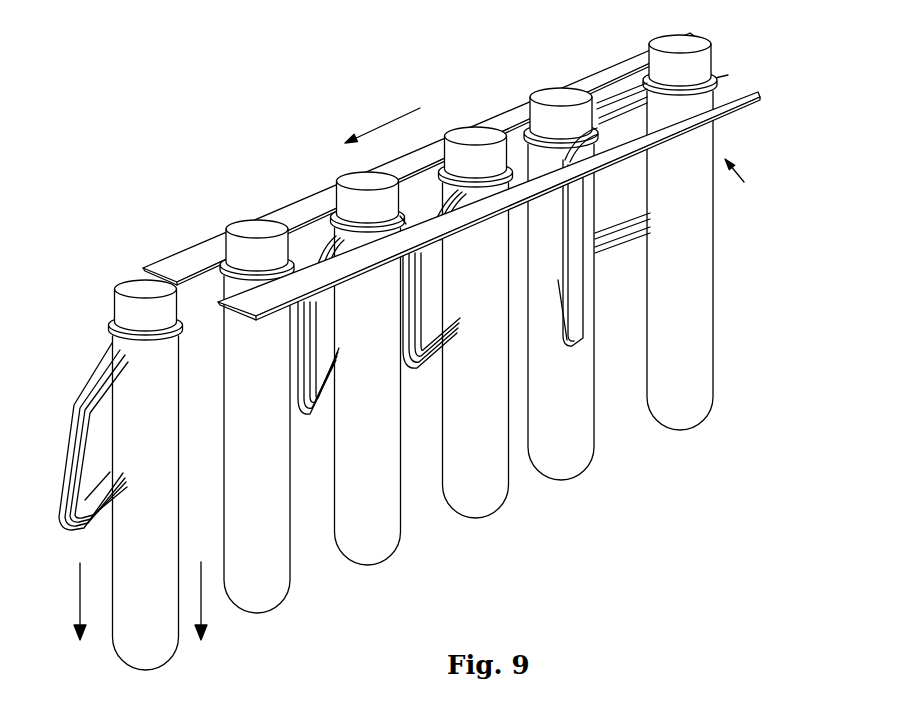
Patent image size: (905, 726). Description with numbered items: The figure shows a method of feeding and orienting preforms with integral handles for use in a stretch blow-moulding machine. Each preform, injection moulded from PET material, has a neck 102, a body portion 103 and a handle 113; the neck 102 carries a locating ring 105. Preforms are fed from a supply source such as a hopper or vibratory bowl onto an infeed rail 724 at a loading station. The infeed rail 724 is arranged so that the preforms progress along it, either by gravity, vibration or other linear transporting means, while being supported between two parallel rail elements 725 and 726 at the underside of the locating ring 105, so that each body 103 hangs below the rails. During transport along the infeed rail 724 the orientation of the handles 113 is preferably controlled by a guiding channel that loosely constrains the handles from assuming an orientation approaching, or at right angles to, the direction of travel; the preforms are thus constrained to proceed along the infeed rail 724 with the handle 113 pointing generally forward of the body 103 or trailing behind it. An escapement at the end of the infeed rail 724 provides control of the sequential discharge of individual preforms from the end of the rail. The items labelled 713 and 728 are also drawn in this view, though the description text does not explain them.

The neck 102 is at (128, 279).
The body portion 103 is at (160, 655).
The locating ring 105 is at (110, 327).
The handle 113 is at (70, 460).
The clip 713 is at (612, 258).
The infeed rail 724 is at (751, 178).
The rail element 725 is at (196, 250).
The rail element 726 is at (322, 271).
The rail support edge 728 is at (403, 221).